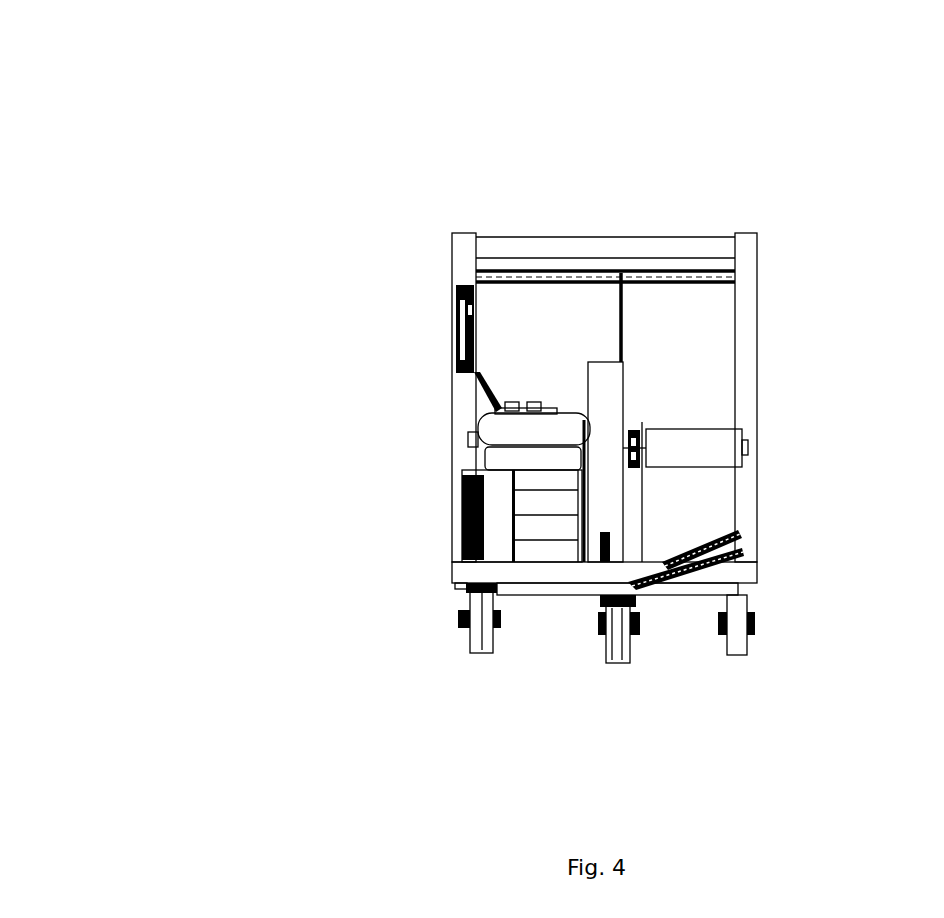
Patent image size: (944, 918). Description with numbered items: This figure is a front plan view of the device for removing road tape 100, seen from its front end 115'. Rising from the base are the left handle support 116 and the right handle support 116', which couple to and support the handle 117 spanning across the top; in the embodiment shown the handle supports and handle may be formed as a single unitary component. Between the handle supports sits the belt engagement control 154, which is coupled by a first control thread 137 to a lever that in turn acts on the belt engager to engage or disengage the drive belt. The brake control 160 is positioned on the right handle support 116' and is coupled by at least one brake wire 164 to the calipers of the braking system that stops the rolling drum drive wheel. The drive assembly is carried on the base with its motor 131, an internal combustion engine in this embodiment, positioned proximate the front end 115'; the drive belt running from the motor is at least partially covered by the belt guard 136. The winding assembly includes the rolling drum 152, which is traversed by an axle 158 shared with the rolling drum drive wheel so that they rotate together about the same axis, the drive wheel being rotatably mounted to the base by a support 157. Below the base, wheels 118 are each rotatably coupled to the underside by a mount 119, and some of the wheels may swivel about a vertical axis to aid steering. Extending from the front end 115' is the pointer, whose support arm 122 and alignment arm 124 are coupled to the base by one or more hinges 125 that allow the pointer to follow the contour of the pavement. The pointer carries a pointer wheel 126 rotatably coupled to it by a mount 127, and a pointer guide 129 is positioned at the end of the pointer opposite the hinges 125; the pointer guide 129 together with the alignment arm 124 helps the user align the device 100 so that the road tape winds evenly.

The device for removing road tape 100 is at (195, 86).
The front end 115' is at (389, 600).
The left handle support 116 is at (796, 397).
The right handle support 116' is at (394, 397).
The handle 117 is at (600, 246).
The wheel 118 is at (472, 655).
The mount 119 is at (458, 618).
The support arm 122 is at (750, 553).
The alignment arm 124 is at (470, 572).
The hinge 125 is at (748, 534).
The pointer wheel 126 is at (622, 663).
The mount 127 is at (632, 607).
The pointer guide 129 is at (755, 600).
The motor 131 is at (470, 455).
The belt guard 136 is at (625, 380).
The first control thread 137 is at (623, 305).
The rolling drum 152 is at (710, 437).
The belt engagement control 154 is at (515, 285).
The support 157 is at (633, 483).
The axle 158 is at (750, 448).
The brake control 160 is at (455, 298).
The brake wire 164 is at (455, 378).